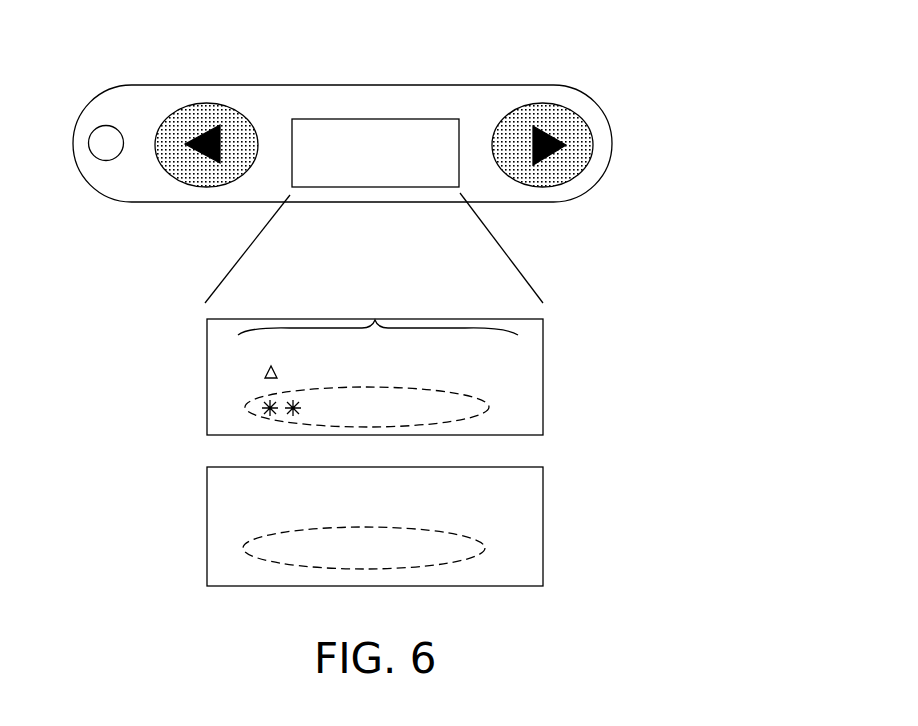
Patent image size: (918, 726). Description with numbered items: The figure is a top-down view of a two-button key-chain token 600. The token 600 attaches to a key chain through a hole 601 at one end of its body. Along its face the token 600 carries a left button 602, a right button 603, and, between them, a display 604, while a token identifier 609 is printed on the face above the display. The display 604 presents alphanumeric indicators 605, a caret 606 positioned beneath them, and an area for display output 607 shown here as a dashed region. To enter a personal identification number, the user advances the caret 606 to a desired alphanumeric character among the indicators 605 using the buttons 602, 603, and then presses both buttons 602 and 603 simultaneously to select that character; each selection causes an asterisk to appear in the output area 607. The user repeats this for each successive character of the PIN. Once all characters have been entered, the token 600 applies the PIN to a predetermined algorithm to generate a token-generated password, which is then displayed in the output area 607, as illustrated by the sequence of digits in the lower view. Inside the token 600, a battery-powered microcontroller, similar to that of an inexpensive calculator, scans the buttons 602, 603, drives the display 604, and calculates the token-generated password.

The two-button key-chain token 600 is at (540, 88).
The hole 601 is at (105, 143).
The left button 602 is at (200, 162).
The right button 603 is at (563, 170).
The display 604 is at (396, 178).
The alphanumeric indicators 605 is at (375, 320).
The caret 606 is at (263, 377).
The area for display output 607 is at (248, 402).
The token identifier 609 is at (328, 101).